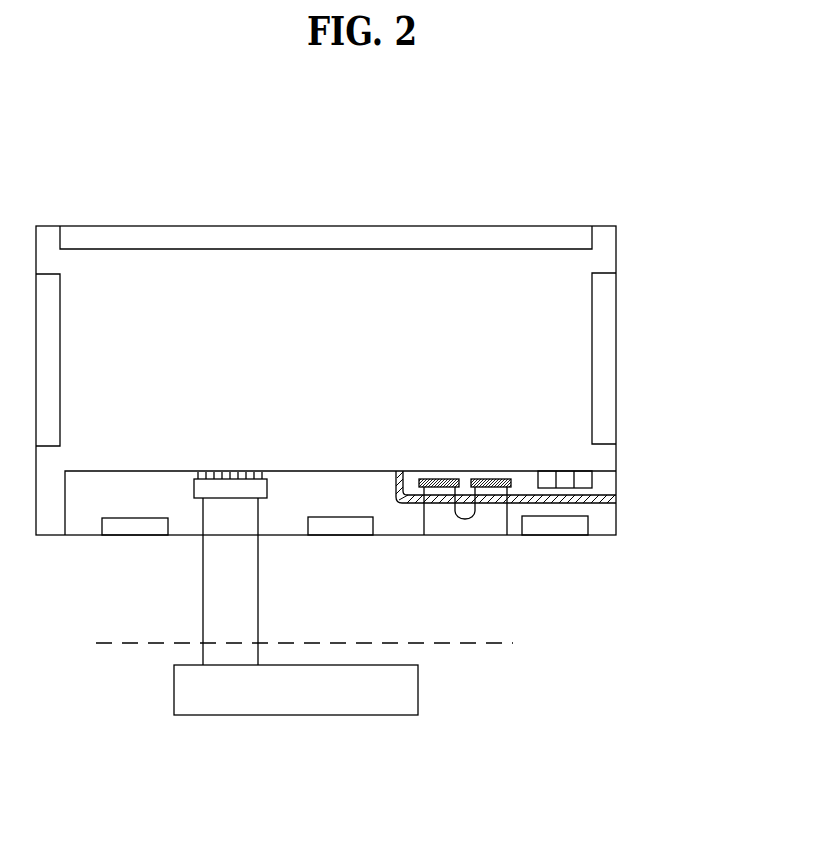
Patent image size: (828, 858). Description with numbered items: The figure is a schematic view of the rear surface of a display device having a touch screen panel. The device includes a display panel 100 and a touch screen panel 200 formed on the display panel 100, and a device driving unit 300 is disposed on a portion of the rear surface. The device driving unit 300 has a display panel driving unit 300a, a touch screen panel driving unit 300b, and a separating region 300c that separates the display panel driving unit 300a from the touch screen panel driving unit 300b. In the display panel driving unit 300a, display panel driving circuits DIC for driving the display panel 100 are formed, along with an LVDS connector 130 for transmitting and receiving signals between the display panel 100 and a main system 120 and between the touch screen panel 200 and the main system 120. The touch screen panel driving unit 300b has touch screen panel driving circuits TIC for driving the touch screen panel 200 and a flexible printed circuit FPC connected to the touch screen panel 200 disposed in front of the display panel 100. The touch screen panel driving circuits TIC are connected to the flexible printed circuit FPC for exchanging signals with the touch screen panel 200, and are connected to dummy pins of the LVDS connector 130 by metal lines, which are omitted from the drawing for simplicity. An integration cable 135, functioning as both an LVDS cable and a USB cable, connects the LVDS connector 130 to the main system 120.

The display panel 100 is at (360, 341).
The touch screen panel 200 is at (616, 226).
The main system 120 is at (296, 690).
The LVDS connector 130 is at (198, 488).
The integration cable 135 is at (249, 620).
The device driving unit 300 is at (474, 326).
The display panel driving unit 300a is at (339, 490).
The touch screen panel driving unit 300b is at (464, 478).
The separating region 300c is at (398, 478).
The display panel driving circuit DIC is at (125, 527).
The touch screen panel driving circuit TIC is at (592, 478).
The flexible printed circuit FPC is at (445, 527).